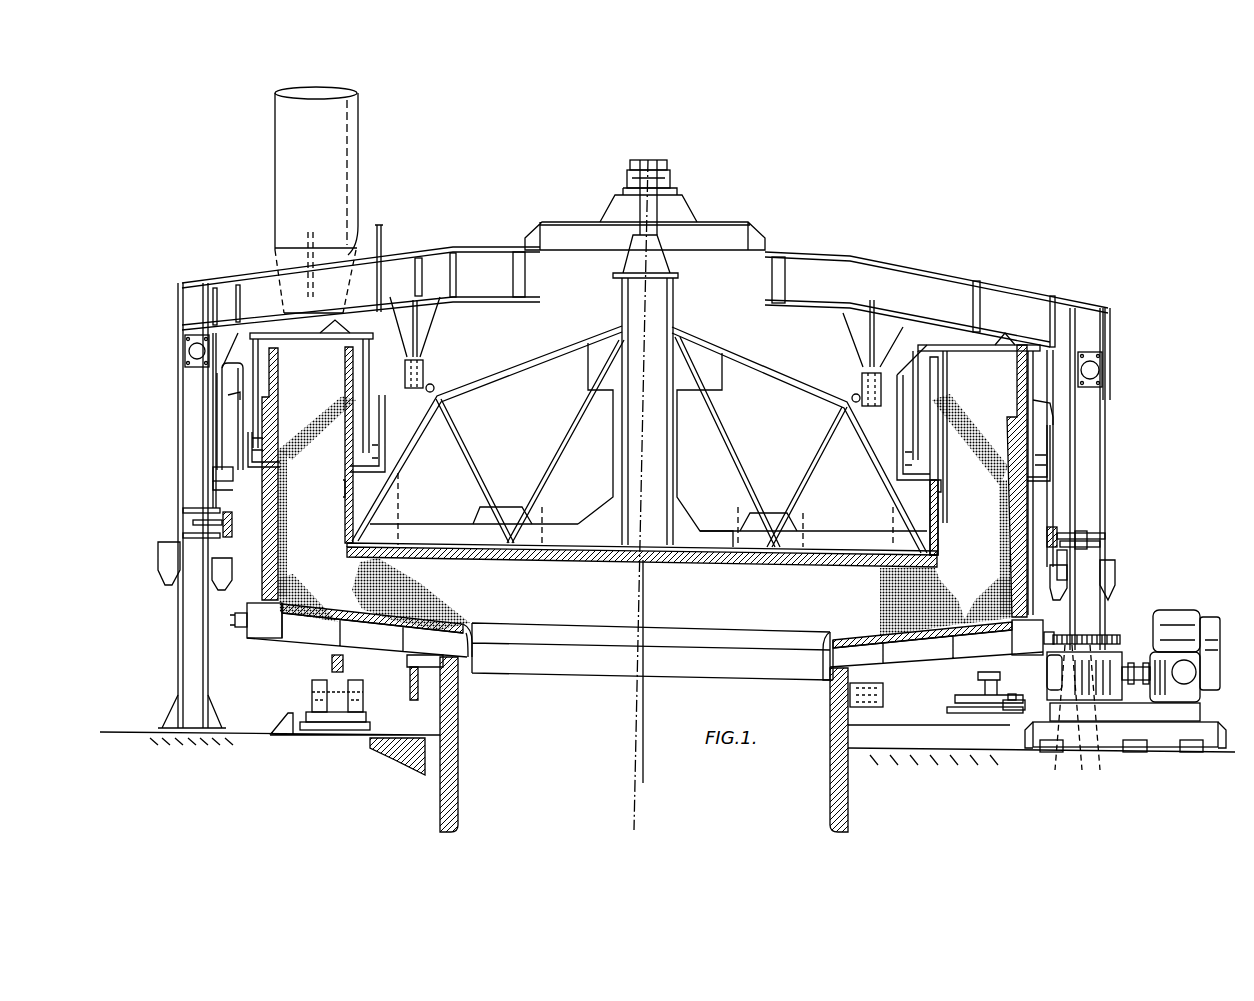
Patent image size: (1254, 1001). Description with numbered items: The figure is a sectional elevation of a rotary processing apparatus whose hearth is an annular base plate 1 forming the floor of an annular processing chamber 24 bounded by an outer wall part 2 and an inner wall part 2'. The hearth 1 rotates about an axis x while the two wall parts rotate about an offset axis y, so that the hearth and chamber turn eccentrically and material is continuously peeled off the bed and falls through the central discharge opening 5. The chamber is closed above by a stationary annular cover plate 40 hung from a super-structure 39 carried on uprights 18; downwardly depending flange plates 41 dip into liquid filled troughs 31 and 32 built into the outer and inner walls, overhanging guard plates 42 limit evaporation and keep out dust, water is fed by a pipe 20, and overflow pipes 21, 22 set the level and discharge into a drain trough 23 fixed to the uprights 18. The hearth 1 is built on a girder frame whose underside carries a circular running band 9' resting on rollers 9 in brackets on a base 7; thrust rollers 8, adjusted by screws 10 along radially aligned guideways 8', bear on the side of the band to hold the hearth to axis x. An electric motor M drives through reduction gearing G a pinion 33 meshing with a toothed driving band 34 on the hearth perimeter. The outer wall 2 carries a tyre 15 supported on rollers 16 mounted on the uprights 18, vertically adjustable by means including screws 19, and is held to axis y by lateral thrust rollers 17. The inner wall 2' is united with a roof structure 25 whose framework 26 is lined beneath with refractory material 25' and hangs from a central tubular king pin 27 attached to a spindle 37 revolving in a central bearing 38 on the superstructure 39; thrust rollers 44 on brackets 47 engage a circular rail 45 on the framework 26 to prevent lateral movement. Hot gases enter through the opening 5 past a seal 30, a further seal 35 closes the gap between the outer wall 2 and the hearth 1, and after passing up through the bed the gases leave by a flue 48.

The annular base plate 1 is at (335, 612).
The outer wall part 2 is at (644, 481).
The inner wall part 2' is at (649, 451).
The central discharge opening 5 is at (540, 664).
The base 7 is at (388, 738).
The thrust rollers 8 is at (667, 744).
The radially aligned guideways 8' is at (967, 714).
The roller 9 is at (371, 708).
The circular running band or track 9' is at (319, 665).
The screws 10 is at (1020, 700).
The tyre 15 is at (232, 522).
The rollers 16 is at (1028, 545).
The lateral thrust rollers 17 is at (1088, 544).
The uprights 18 is at (207, 393).
The screws 19 is at (1112, 582).
The pipe 20 is at (380, 270).
The overflow pipe 21 is at (217, 436).
The overflow pipe 22 is at (216, 411).
The drain trough 23 is at (213, 473).
The annular processing chamber 24 is at (322, 393).
The roof structure 25 is at (639, 439).
The refractory material 25' is at (642, 567).
The framework 26 is at (808, 470).
The central tubular rod or king pin 27 is at (629, 304).
The seal 30 is at (848, 700).
The liquid filled trough 31 is at (378, 445).
The liquid filled trough 32 is at (1104, 432).
The pinion 33 is at (1108, 636).
The toothed driving band 34 is at (1052, 636).
The seal 35 is at (245, 601).
The spindle 37 is at (632, 262).
The central bearing 38 is at (664, 186).
The super-structure 39 is at (480, 257).
The stationary annular cover plate 40 is at (343, 323).
The flange plates 41 is at (275, 340).
The overhanging guard plates 42 is at (1050, 395).
The thrust rollers 44 is at (425, 373).
The circular rail 45 is at (436, 388).
The brackets 47 is at (438, 322).
The flue or duct 48 is at (280, 192).
The reduction gearing G is at (1110, 660).
The electric motor M is at (1178, 622).
The axis x is at (645, 768).
The axis y is at (634, 797).